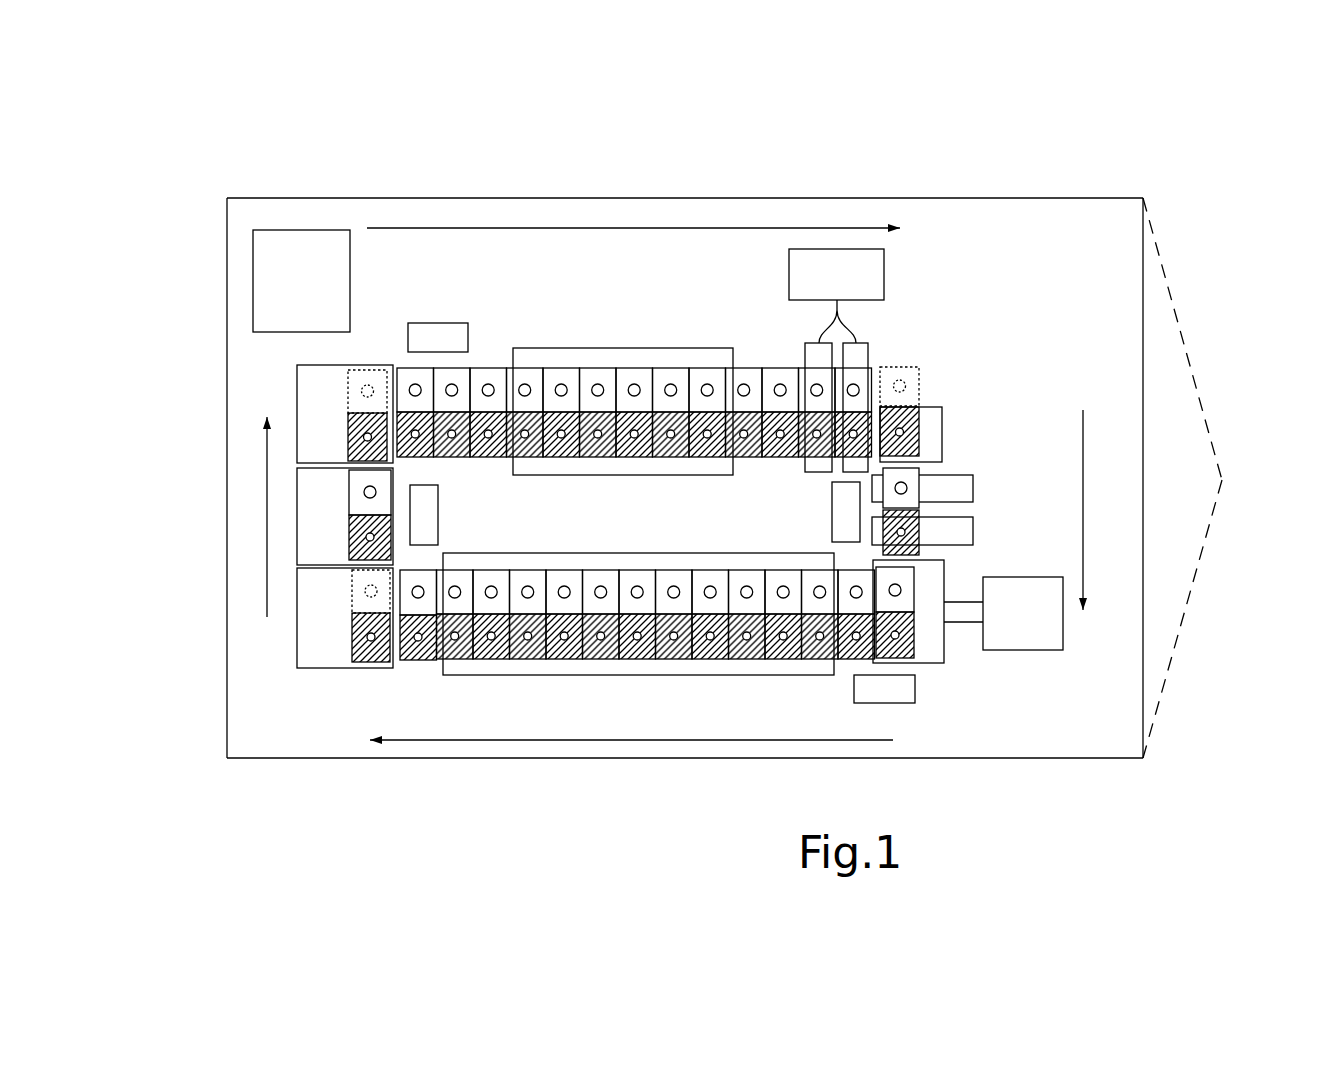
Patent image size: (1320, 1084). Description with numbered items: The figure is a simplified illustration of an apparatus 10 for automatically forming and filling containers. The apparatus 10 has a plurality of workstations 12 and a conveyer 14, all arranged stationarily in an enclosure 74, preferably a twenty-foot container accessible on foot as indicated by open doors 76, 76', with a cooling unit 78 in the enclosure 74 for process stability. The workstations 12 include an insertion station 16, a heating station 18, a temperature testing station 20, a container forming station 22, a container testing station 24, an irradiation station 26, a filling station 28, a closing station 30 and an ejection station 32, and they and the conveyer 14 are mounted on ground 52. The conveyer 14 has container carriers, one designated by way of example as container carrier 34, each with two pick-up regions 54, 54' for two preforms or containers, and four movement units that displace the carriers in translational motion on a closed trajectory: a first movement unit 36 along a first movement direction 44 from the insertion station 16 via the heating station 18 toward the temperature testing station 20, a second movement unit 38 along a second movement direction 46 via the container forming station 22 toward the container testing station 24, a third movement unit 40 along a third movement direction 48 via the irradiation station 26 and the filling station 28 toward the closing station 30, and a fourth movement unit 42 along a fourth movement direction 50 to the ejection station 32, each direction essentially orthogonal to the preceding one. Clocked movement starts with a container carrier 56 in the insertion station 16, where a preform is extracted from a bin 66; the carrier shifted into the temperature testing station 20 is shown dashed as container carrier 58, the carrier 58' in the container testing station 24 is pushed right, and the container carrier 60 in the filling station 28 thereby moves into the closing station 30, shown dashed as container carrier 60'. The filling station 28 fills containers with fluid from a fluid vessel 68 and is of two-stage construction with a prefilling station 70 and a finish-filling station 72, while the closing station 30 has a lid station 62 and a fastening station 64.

The apparatus for automatically forming and filling containers 10 is at (997, 242).
The workstations 12 is at (268, 708).
The conveyer 14 is at (550, 262).
The insertion station 16 is at (957, 660).
The heating station 18 is at (685, 675).
The temperature testing station 20 is at (330, 668).
The container forming station 22 is at (297, 528).
The container testing station 24 is at (297, 392).
The irradiation station 26 is at (600, 348).
The filling station 28 is at (858, 318).
The closing station 30 is at (963, 453).
The ejection station 32 is at (973, 530).
The container carrier 34 is at (409, 620).
The first movement unit 36 is at (877, 703).
The second movement unit 38 is at (438, 520).
The third movement unit 40 is at (440, 323).
The fourth movement unit 42 is at (830, 497).
The first movement direction 44 is at (720, 740).
The second movement direction 46 is at (267, 475).
The third movement direction 48 is at (596, 228).
The fourth movement direction 50 is at (1083, 505).
The ground 52 is at (1065, 745).
The pick-up region 54 is at (450, 731).
The pick-up region 54' is at (445, 567).
The container carrier 56 is at (923, 595).
The container carrier 58 is at (315, 634).
The container carrier 58' is at (340, 415).
The container carrier 60 is at (906, 392).
The container carrier 60' is at (956, 372).
The lid station 62 is at (942, 410).
The fastening station 64 is at (973, 487).
The bin 66 is at (1020, 650).
The fluid vessel 68 is at (884, 265).
The prefilling station 70 is at (805, 350).
The finish-filling station 72 is at (857, 360).
The enclosure 74 is at (745, 198).
The open door 76 is at (1211, 339).
The open door 76' is at (1221, 619).
The cooling unit 78 is at (350, 272).